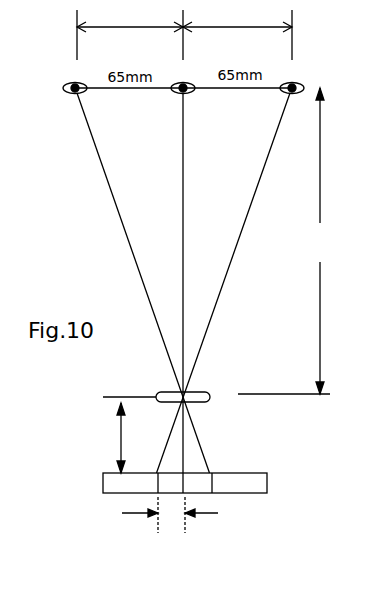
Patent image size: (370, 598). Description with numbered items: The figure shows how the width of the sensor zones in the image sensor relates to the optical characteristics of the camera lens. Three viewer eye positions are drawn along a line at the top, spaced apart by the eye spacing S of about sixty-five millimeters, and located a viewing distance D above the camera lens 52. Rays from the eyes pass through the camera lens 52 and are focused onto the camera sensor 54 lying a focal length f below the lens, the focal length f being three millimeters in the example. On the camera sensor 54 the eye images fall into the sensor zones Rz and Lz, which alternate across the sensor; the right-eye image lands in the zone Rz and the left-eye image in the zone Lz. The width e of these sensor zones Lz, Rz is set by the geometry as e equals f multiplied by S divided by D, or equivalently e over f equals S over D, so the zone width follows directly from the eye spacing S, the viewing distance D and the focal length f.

The camera lens 52 is at (207, 392).
The camera sensor 54 is at (265, 474).
The eye spacing S is at (184, 35).
The viewing distance D is at (284, 241).
The focal length f is at (76, 438).
The Rz sensor zone Rz is at (168, 483).
The Lz sensor zone Lz is at (200, 483).
The width of the sensor zones e is at (170, 525).